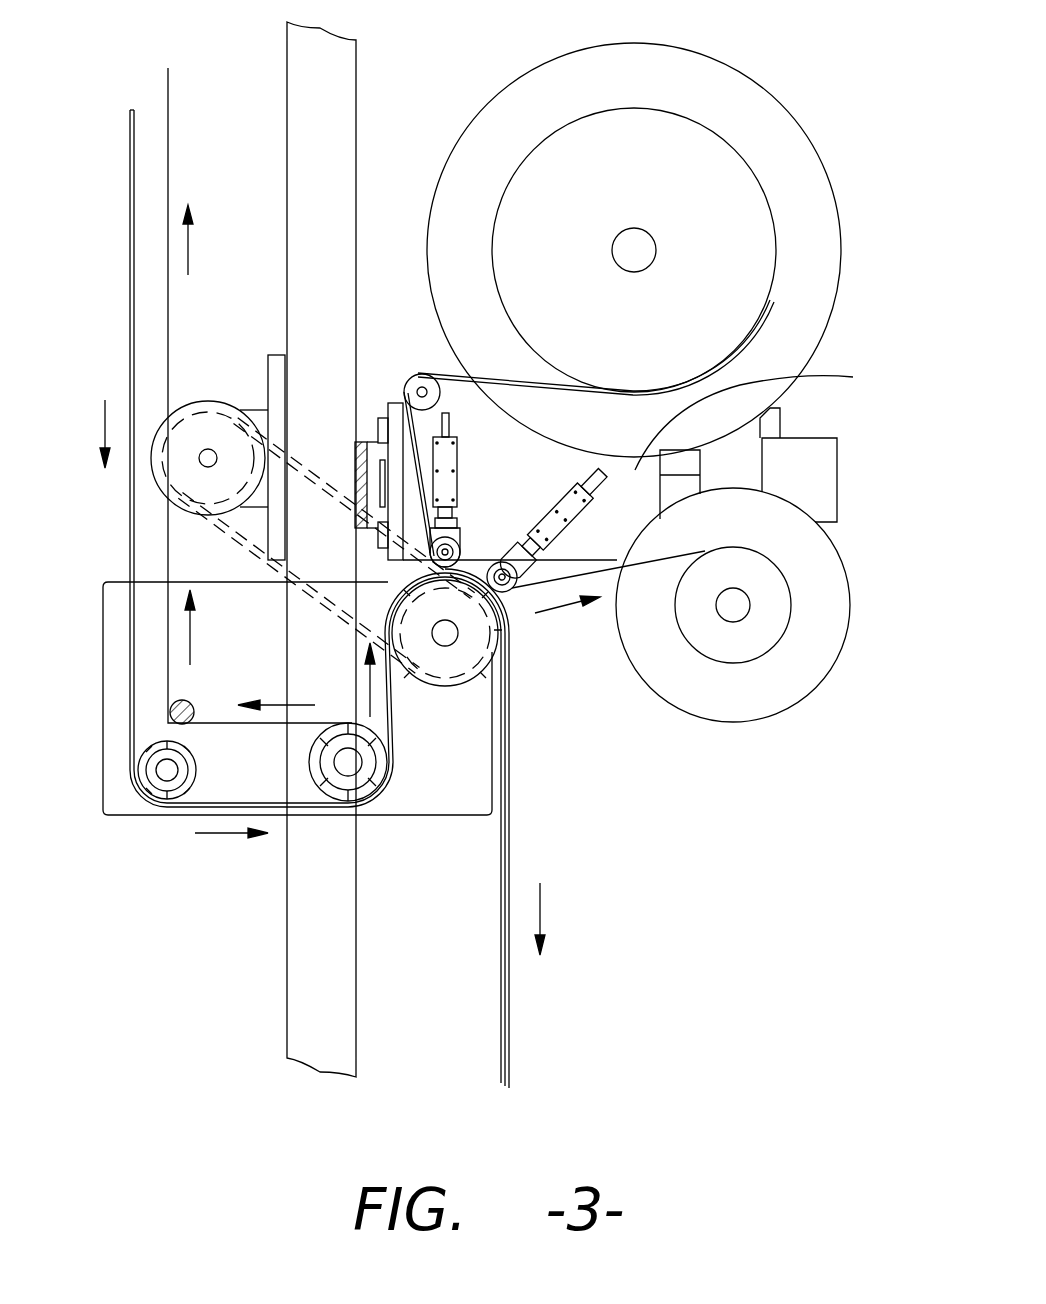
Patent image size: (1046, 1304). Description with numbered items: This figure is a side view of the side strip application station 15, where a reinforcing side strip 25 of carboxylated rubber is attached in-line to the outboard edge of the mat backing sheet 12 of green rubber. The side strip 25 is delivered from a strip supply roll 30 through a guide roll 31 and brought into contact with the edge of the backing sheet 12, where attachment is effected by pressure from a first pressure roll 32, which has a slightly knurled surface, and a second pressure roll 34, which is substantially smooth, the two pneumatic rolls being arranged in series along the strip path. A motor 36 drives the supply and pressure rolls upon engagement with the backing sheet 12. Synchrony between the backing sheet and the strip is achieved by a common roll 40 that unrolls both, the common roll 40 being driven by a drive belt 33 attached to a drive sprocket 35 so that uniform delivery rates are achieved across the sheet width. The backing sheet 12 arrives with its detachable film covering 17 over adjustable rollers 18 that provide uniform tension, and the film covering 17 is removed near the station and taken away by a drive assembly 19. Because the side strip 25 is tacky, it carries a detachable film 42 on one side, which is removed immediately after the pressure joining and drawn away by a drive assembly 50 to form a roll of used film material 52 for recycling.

The mat backing sheet 12 is at (127, 283).
The side strip application station 15 is at (851, 27).
The detachable film covering 17 is at (212, 720).
The adjustable rollers 18 is at (148, 747).
The drive assembly 19 is at (383, 780).
The side strip 25 is at (547, 383).
The strip supply roll 30 is at (767, 187).
The guide roll 31 is at (376, 383).
The first pressure roll 32 is at (465, 550).
The drive belt 33 is at (258, 550).
The second pressure roll 34 is at (523, 597).
The drive sprocket 35 is at (190, 400).
The motor 36 is at (765, 419).
The common roll 40 is at (423, 683).
The detachable film 42 is at (608, 602).
The drive assembly 50 is at (748, 722).
The roll of used film material 52 is at (790, 578).